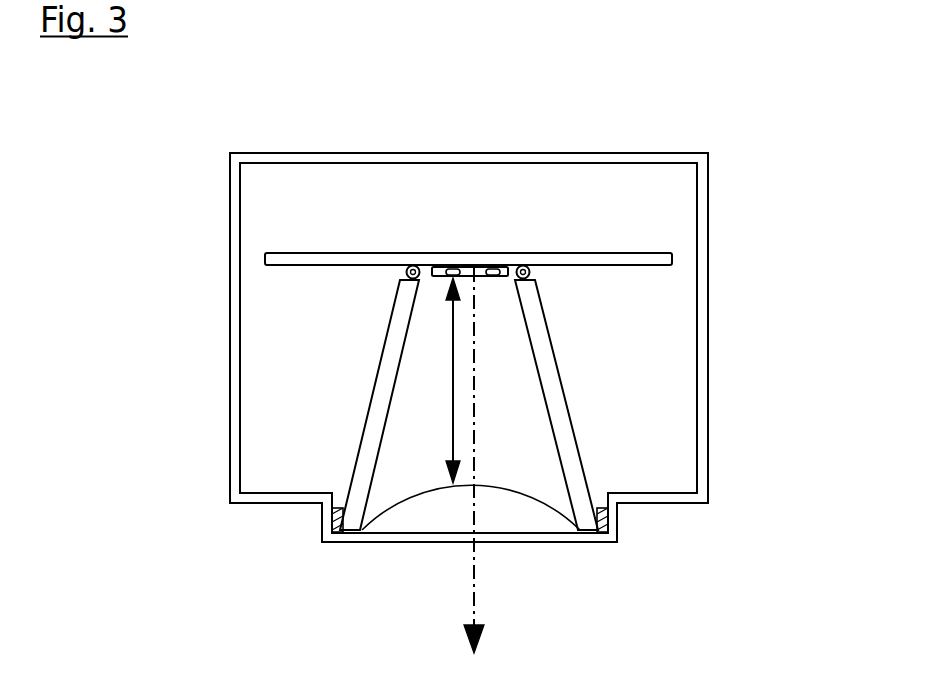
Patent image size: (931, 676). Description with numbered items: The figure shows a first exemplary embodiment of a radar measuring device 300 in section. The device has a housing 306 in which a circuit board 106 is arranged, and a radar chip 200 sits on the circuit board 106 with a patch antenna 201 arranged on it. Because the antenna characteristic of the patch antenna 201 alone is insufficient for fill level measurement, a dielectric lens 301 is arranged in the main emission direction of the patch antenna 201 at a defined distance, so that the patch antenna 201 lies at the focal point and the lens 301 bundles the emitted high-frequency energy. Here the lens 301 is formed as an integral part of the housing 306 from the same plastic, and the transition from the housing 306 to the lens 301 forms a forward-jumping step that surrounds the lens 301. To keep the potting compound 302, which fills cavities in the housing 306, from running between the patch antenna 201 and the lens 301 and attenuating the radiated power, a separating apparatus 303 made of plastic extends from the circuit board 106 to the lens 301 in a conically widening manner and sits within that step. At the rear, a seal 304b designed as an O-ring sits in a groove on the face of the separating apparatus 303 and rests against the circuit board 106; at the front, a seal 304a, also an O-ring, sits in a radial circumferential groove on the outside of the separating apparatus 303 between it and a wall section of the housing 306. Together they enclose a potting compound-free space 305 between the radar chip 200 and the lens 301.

The radar measuring device 300 is at (461, 362).
The circuit board 106 is at (352, 258).
The radar chip 200 is at (472, 268).
The patch antenna 201 is at (493, 280).
The dielectric lens 301 is at (432, 520).
The potting compound 302 is at (277, 462).
The separating apparatus 303 is at (382, 388).
The front seal 304a is at (600, 522).
The rear seal 304b is at (413, 268).
The potting compound-free space 305 is at (497, 413).
The housing 306 is at (700, 425).